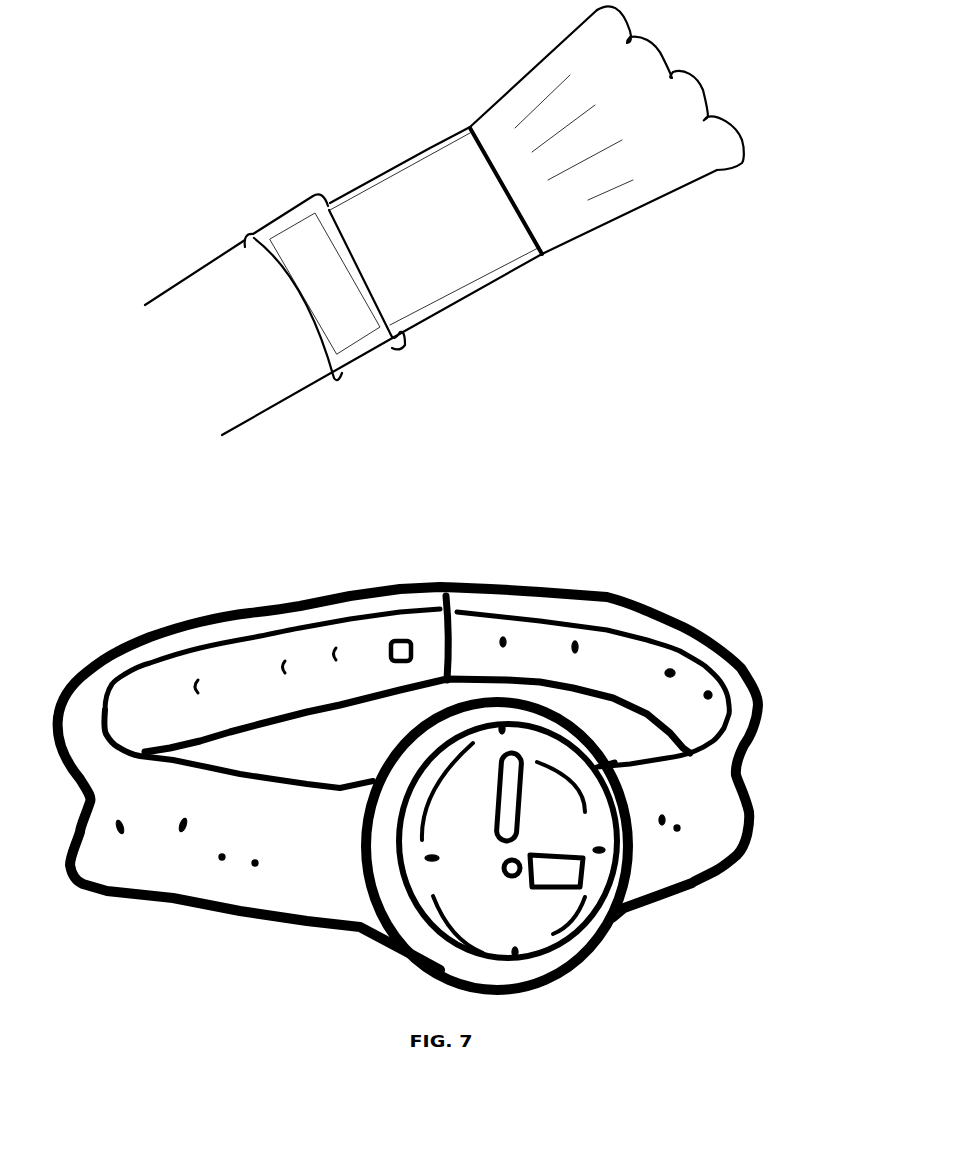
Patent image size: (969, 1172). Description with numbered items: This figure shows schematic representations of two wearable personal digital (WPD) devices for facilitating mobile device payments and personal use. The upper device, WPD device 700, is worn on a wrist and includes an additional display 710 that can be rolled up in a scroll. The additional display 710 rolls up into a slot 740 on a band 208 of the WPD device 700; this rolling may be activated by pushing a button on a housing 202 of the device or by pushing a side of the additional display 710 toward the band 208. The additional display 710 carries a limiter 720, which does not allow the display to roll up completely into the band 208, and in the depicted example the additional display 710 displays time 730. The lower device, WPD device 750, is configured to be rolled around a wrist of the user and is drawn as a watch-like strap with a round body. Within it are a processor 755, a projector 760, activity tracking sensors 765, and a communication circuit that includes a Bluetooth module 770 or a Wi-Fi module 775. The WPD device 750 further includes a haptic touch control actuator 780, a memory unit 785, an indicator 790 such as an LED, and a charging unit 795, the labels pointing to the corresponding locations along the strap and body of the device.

The WPD device 700 is at (784, 65).
The additional display 710 is at (383, 174).
The limiter 720 is at (543, 257).
The time 730 is at (415, 240).
The slot 740 is at (327, 200).
The housing 202 is at (365, 342).
The band 208 is at (333, 378).
The WPD device 750 is at (752, 552).
The processor 755 is at (715, 870).
The projector 760 is at (598, 590).
The activity tracking sensors 765 is at (333, 583).
The Bluetooth module 770 is at (696, 626).
The Wi-Fi module 775 is at (760, 687).
The haptic touch control actuator 780 is at (512, 585).
The memory unit 785 is at (222, 903).
The indicator 790 is at (682, 888).
The charging unit 795 is at (95, 893).